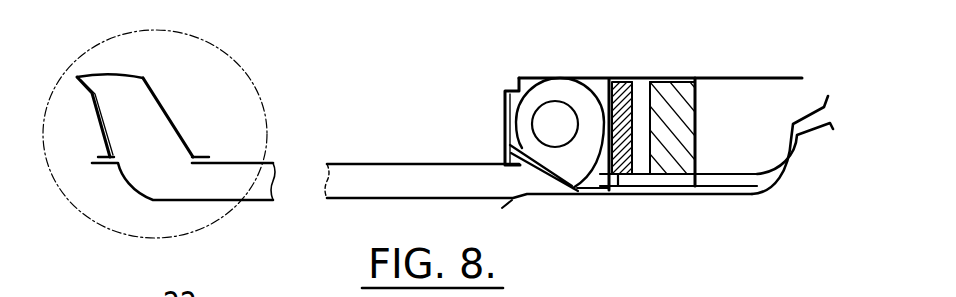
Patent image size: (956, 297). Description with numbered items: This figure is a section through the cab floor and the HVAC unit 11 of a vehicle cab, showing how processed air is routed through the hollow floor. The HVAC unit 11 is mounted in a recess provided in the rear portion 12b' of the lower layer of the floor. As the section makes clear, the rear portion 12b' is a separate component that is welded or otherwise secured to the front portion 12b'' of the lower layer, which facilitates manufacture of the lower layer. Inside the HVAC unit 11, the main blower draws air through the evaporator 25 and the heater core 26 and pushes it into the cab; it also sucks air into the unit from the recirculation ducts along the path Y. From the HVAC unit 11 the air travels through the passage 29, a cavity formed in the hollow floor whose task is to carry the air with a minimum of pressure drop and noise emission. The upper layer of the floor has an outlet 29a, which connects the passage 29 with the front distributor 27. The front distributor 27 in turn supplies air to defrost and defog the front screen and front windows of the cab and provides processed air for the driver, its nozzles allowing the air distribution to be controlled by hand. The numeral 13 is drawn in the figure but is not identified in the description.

The HVAC unit 11 is at (733, 108).
The rear portion of the lower layer 12b' is at (801, 162).
The front portion of the lower layer 12b'' is at (316, 210).
The roller 13 is at (553, 128).
The evaporator 25 is at (675, 158).
The heater core 26 is at (621, 160).
The front distributor 27 is at (178, 127).
The passage 29 is at (352, 176).
The outlet 29a is at (134, 165).
The path Y is at (231, 60).